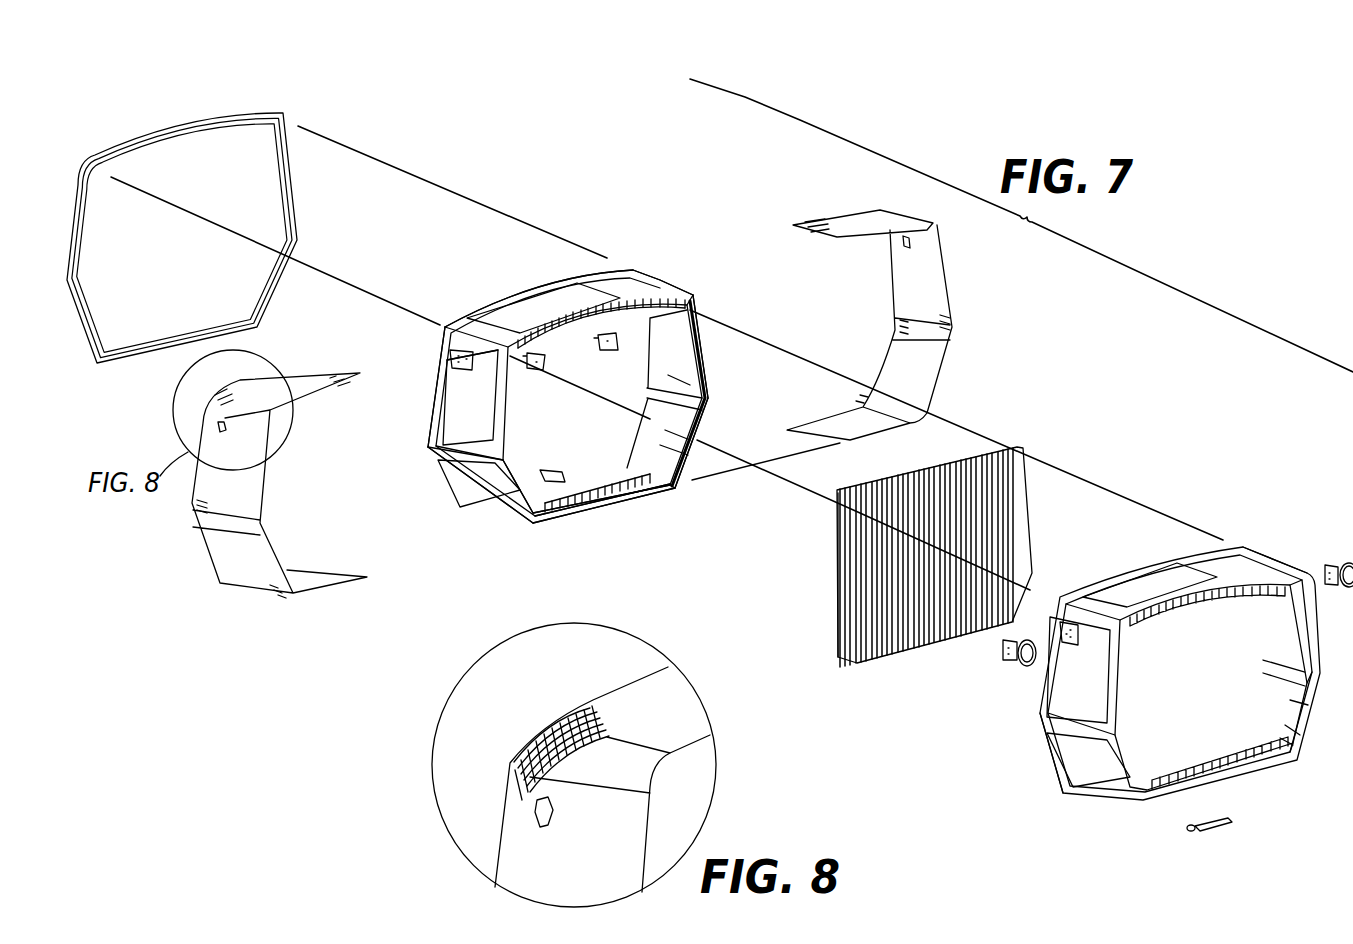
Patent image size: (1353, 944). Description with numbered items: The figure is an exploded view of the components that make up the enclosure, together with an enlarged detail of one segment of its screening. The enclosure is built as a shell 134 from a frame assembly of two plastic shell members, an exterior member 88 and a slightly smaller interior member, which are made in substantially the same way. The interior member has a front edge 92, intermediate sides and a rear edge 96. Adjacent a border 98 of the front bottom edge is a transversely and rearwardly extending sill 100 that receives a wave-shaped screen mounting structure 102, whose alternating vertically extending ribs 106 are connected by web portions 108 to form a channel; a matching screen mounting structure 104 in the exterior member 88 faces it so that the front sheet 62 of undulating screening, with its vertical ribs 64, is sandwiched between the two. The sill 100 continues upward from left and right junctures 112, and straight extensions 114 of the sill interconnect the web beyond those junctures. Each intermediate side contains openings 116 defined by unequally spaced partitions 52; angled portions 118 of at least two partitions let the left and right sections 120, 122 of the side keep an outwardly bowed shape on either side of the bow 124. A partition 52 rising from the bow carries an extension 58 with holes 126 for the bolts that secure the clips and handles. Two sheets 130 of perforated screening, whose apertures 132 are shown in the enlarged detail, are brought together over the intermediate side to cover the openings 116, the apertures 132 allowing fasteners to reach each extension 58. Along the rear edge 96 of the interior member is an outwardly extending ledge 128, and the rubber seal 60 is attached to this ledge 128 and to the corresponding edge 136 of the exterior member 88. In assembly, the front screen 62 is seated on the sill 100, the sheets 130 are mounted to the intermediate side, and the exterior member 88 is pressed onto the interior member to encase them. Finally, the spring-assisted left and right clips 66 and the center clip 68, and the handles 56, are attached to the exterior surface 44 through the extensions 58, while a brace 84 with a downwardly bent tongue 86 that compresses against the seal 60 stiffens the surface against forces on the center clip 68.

In FIG. 7, the exterior surface 44 is at (1105, 825).
In FIG. 7, the partitions 52 is at (1045, 735).
In FIG. 7, the handles 56 is at (1351, 554).
In FIG. 7, the extension 58 is at (1063, 617).
In FIG. 7, the seal 60 is at (240, 113).
In FIG. 7, the sheet of undulating screening 62 is at (842, 671).
In FIG. 7, the ribs 64 is at (948, 645).
In FIG. 7, the left and right clips 66 is at (537, 370).
In FIG. 7, the center clip 68 is at (495, 488).
In FIG. 7, the brace 84 is at (1232, 825).
In FIG. 7, the tongue 86 is at (1190, 835).
In FIG. 7, the exterior shell member 88 is at (1046, 812).
In FIG. 7, the front edge 92 is at (528, 510).
In FIG. 7, the rear edge 96 is at (650, 287).
In FIG. 7, the border 98 is at (655, 490).
In FIG. 7, the sill 100 is at (622, 490).
In FIG. 7, the wave-shaped screen mounting structure 102 is at (588, 502).
In FIG. 7, the screen mounting structure 104 is at (1263, 782).
In FIG. 7, the ribs 106 is at (675, 487).
In FIG. 7, the web portions 108 is at (627, 480).
In FIG. 7, the junctures 112 is at (705, 415).
In FIG. 7, the straight extensions 114 is at (707, 385).
In FIG. 7, the openings 116 is at (483, 424).
In FIG. 7, the angled portions 118 is at (648, 392).
In FIG. 7, the left section 120 is at (423, 417).
In FIG. 7, the right section 122 is at (723, 361).
In FIG. 7, the bow 124 is at (181, 530).
In FIG. 7, the holes 126 is at (460, 358).
In FIG. 7, the ledge 128 is at (540, 285).
In FIG. 7, the sheets of perforated screening 130 is at (945, 305).
In FIG. 8, the sheets of perforated screening 130 is at (507, 790).
In FIG. 7, the apertures 132 is at (915, 245).
In FIG. 8, the apertures 132 is at (553, 812).
In FIG. 7, the shell 134 is at (1193, 216).
In FIG. 7, the edge 136 is at (1255, 548).